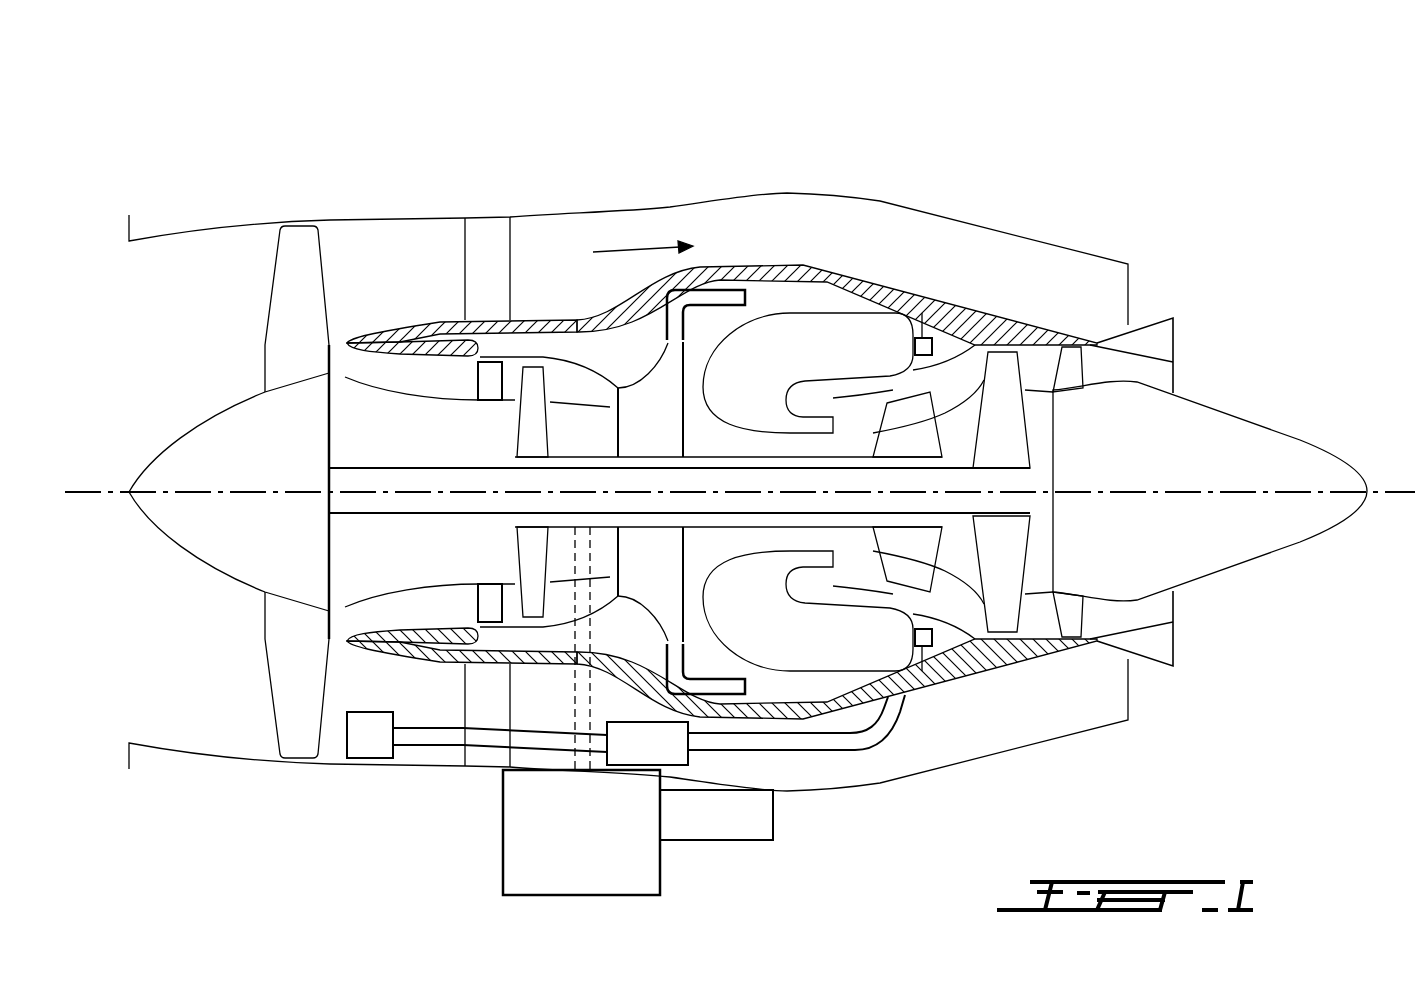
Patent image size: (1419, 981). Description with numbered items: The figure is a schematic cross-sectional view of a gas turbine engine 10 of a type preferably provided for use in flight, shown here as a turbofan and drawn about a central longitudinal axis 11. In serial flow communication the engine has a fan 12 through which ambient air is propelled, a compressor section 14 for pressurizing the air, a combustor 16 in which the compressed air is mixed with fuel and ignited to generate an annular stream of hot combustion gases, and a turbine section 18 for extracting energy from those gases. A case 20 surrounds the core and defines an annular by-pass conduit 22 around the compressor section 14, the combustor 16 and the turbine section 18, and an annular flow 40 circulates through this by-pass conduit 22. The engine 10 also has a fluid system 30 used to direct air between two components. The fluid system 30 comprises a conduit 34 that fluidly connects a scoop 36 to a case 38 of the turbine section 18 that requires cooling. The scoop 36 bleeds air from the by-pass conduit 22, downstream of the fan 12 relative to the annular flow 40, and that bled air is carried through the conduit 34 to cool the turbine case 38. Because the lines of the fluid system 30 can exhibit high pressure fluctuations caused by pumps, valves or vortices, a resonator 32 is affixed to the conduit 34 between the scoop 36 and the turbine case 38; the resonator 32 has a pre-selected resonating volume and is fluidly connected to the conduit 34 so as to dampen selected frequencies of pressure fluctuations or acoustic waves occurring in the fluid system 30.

The gas turbine engine 10 is at (978, 140).
The central longitudinal axis 11 is at (1407, 490).
The fan 12 is at (293, 660).
The compressor section 14 is at (570, 380).
The combustor 16 is at (805, 345).
The turbine section 18 is at (957, 563).
The case 20 is at (1048, 242).
The annular by-pass conduit 22 is at (1060, 299).
The fluid system 30 is at (588, 812).
The resonator 32 is at (668, 767).
The conduit 34 is at (893, 750).
The scoop 36 is at (370, 760).
The case of the turbine section 38 is at (1030, 660).
The annular flow 40 is at (626, 245).